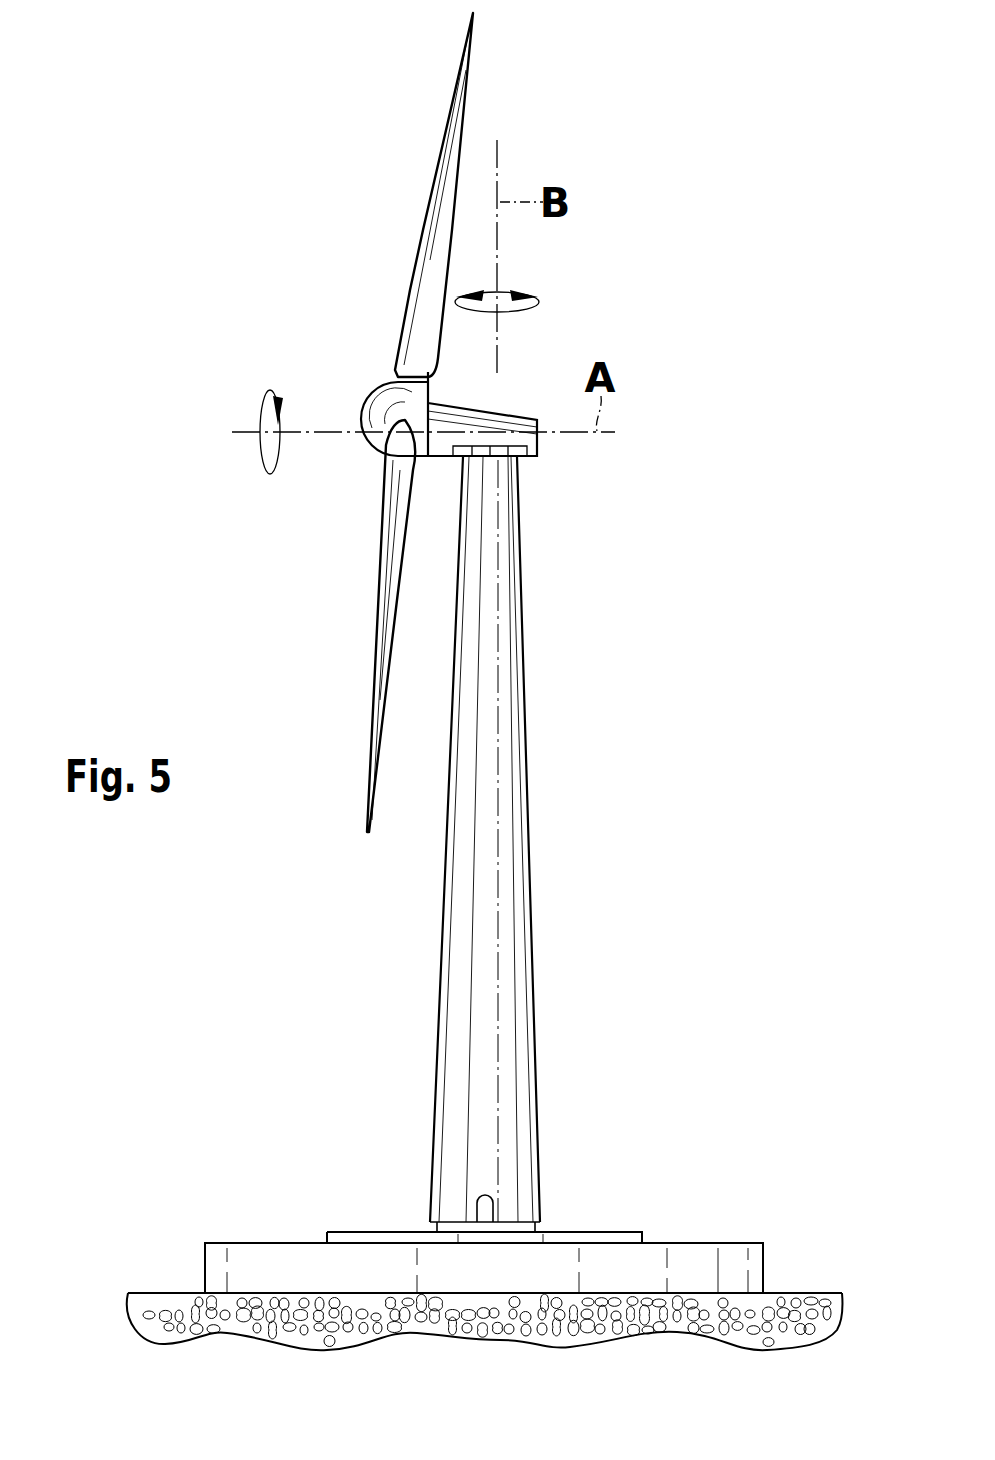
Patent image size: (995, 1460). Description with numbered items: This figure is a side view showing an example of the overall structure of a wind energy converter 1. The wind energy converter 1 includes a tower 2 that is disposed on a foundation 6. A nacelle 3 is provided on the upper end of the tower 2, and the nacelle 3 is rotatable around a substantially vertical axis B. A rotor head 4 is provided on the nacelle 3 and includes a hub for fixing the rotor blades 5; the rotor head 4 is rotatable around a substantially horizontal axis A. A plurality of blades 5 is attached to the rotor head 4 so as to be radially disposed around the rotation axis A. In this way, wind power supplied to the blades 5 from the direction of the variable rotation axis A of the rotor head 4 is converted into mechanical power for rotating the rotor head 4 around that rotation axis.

The wind energy converter 1 is at (192, 181).
The tower 2 is at (493, 843).
The nacelle 3 is at (526, 392).
The rotor head 4 is at (387, 410).
The rotor blades 5 is at (445, 212).
The foundation 6 is at (690, 1263).